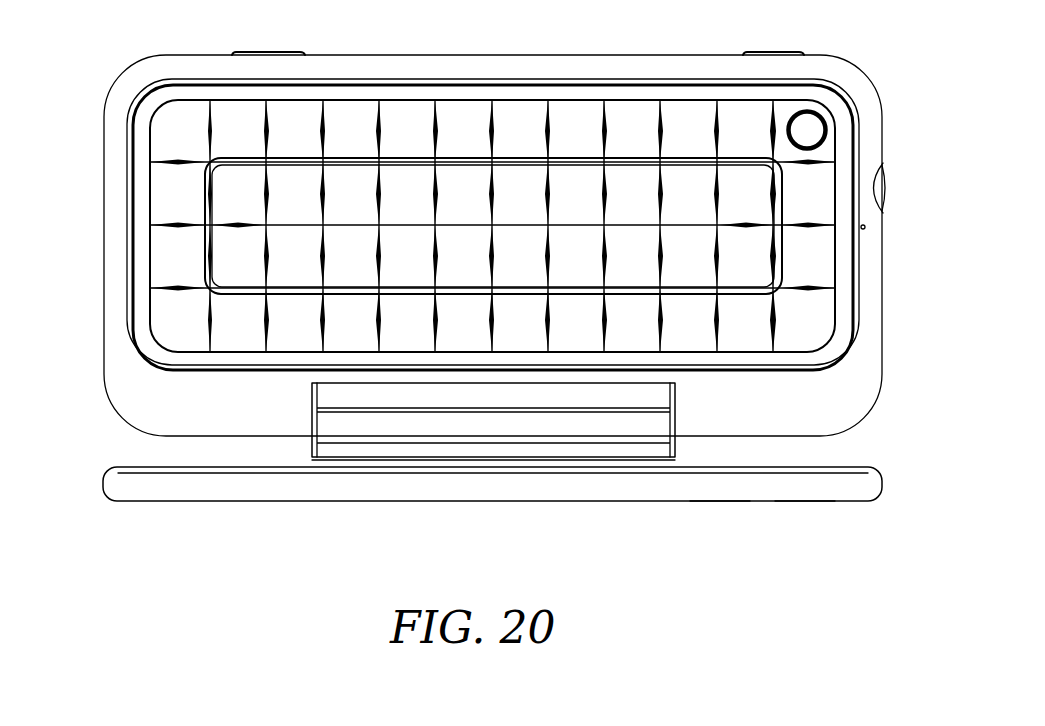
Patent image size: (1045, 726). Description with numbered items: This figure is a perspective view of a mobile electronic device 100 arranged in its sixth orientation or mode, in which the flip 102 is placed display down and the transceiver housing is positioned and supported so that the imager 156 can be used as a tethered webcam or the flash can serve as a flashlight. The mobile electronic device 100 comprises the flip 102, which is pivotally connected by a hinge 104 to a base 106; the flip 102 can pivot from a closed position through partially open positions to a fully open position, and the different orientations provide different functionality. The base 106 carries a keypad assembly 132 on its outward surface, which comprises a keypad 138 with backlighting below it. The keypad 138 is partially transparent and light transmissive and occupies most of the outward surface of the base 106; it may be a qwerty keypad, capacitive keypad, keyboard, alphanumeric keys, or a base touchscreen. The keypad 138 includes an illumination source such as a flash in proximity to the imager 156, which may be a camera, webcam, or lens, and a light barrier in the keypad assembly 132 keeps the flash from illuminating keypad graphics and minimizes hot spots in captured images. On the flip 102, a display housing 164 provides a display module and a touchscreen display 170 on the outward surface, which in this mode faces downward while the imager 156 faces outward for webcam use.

The mobile electronic device 100 is at (100, 446).
The flip 102 is at (495, 508).
The hinge 104 is at (358, 427).
The base 106 is at (883, 362).
The keypad assembly 132 is at (693, 120).
The keypad 138 is at (567, 192).
The imager 156 is at (811, 127).
The display housing 164 is at (720, 502).
The touchscreen display 170 is at (805, 502).